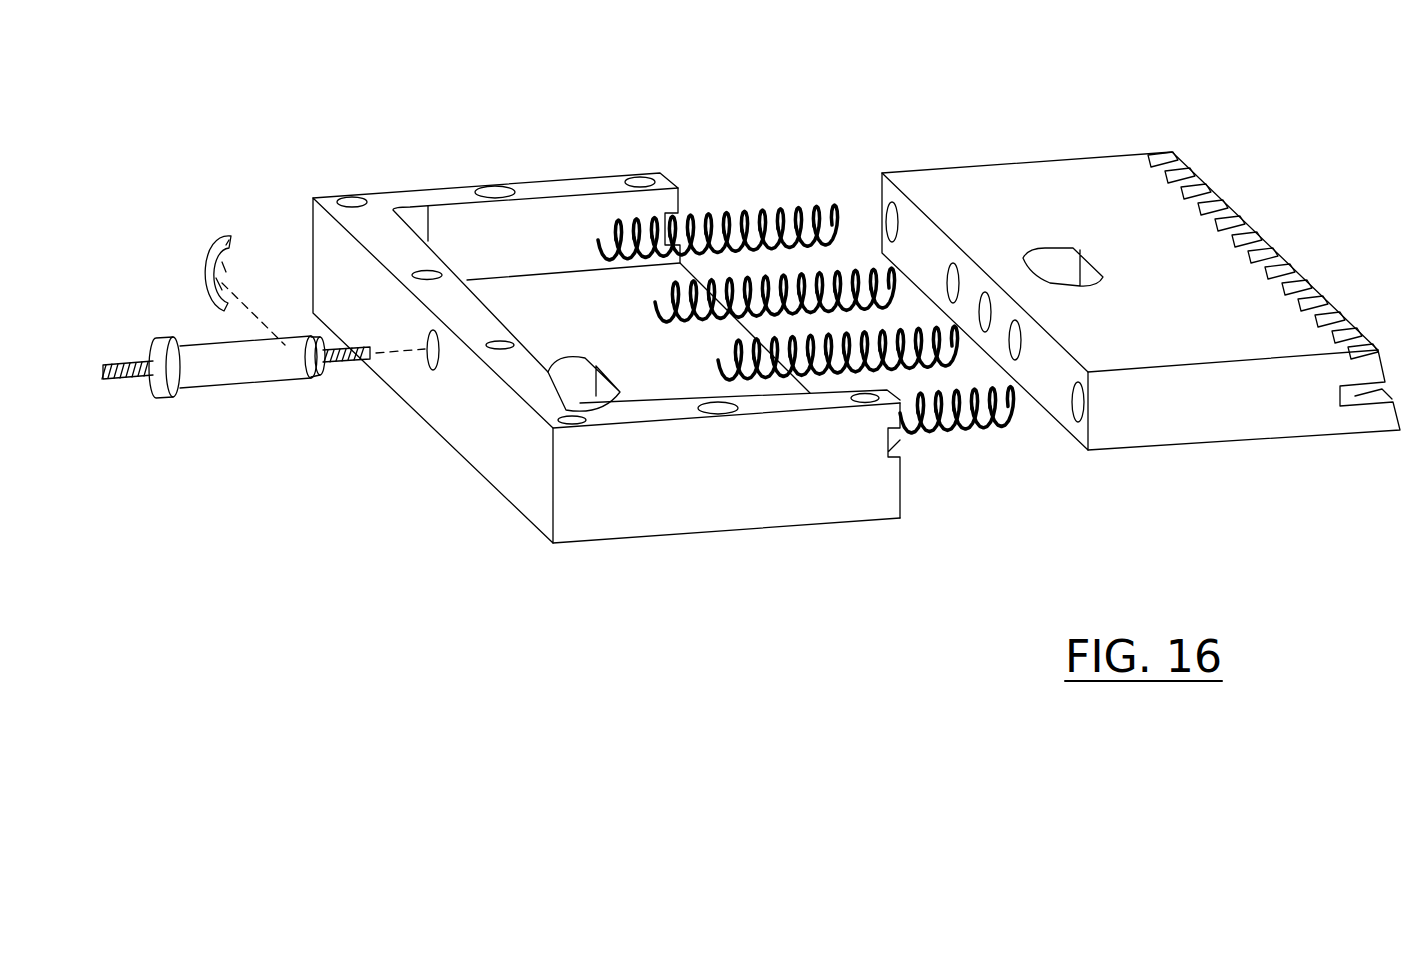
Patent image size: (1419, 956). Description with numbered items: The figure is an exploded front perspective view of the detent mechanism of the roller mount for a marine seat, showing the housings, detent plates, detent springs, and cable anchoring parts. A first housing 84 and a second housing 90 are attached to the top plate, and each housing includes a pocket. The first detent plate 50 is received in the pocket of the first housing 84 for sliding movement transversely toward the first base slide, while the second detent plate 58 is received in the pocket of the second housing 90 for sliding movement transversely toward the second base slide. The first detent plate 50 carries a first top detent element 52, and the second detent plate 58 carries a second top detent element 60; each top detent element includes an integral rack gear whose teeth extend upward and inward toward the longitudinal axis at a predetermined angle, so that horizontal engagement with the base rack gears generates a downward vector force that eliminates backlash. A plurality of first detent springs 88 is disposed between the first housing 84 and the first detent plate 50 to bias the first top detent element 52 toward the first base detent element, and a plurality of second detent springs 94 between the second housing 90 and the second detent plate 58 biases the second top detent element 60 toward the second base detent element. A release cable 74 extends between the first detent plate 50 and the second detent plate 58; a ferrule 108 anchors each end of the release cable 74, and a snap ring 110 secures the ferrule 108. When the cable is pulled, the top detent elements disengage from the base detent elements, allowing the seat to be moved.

The first housing 84 is at (606, 310).
The second housing 90 is at (547, 175).
The first detent springs 88 is at (806, 260).
The second detent springs 94 is at (800, 207).
The first detent plate 50 is at (1141, 253).
The second detent plate 58 is at (1141, 253).
The first top detent element 52 is at (1263, 226).
The second top detent element 60 is at (1200, 183).
The release cable 74 is at (367, 353).
The ferrule 108 is at (257, 372).
The snap ring 110 is at (212, 228).